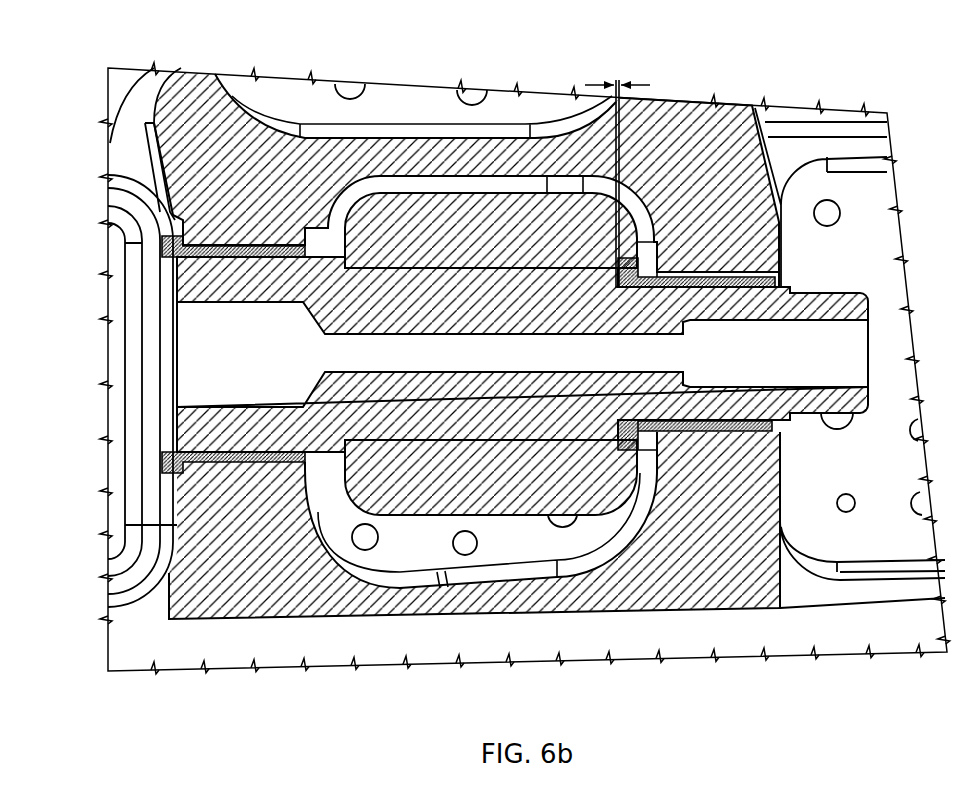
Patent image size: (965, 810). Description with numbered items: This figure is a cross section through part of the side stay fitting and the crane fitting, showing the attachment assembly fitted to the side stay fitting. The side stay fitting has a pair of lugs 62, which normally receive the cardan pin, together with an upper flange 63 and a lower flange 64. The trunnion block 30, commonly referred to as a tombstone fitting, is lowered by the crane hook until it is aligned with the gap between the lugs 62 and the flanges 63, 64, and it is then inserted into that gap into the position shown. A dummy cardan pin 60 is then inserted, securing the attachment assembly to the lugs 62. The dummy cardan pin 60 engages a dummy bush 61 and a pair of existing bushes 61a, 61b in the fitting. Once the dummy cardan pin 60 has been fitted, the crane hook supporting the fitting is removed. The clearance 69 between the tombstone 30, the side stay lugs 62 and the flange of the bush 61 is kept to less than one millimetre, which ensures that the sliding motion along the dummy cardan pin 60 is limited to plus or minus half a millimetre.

The trunnion block 30 is at (478, 193).
The dummy cardan pin 60 is at (405, 447).
The dummy bush 61 is at (703, 432).
The existing bush 61a is at (222, 258).
The existing bush 61b is at (718, 287).
The lug 62 is at (150, 163).
The upper flange 63 is at (378, 137).
The lower flange 64 is at (389, 622).
The clearance 69 is at (614, 80).